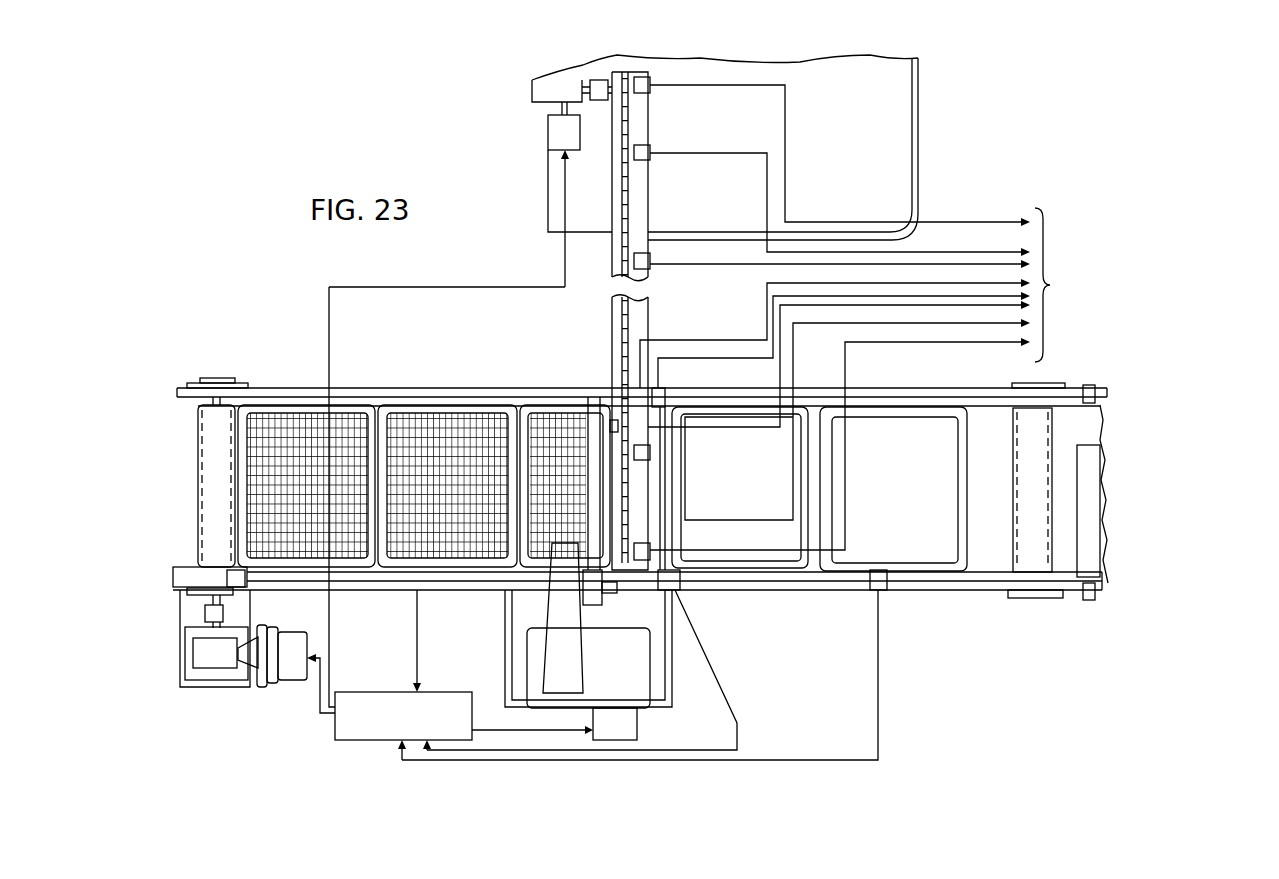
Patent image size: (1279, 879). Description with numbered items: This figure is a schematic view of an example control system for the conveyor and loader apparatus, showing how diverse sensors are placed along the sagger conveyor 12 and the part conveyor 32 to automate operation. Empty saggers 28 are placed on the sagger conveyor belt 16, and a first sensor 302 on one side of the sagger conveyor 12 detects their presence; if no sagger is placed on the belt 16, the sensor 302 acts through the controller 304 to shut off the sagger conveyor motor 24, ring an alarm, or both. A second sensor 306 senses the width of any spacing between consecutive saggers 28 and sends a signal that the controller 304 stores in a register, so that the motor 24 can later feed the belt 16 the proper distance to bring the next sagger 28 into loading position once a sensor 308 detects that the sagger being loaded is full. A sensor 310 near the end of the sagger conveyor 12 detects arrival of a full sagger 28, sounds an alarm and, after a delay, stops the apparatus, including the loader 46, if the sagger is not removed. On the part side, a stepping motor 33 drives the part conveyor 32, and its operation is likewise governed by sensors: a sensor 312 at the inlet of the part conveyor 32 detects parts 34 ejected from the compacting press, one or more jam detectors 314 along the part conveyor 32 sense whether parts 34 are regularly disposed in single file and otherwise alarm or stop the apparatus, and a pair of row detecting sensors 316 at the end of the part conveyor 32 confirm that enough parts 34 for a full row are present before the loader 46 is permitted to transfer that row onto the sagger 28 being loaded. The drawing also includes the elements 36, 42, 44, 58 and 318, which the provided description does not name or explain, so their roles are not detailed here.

The sagger conveyor 12 is at (876, 393).
The sagger conveyor belt 16 is at (992, 570).
The sagger conveyor motor 24 is at (297, 673).
The saggers 28 is at (458, 408).
The part conveyor 32 is at (613, 281).
The stepping motor 33 is at (555, 140).
The parts 34 is at (437, 435).
The housing 36 is at (918, 161).
The support post 42 is at (584, 394).
The post base 44 is at (589, 607).
The loader 46 is at (584, 677).
The actuator 58 is at (637, 733).
The first sensor 302 is at (880, 592).
The controller 304 is at (462, 684).
The second sensor 306 is at (681, 577).
The sensor 308 is at (661, 398).
The sensor 310 is at (235, 577).
The sensor 312 is at (641, 81).
The jam detectors 314 is at (655, 152).
The row detecting sensors 316 is at (611, 418).
The sensor 318 is at (650, 553).